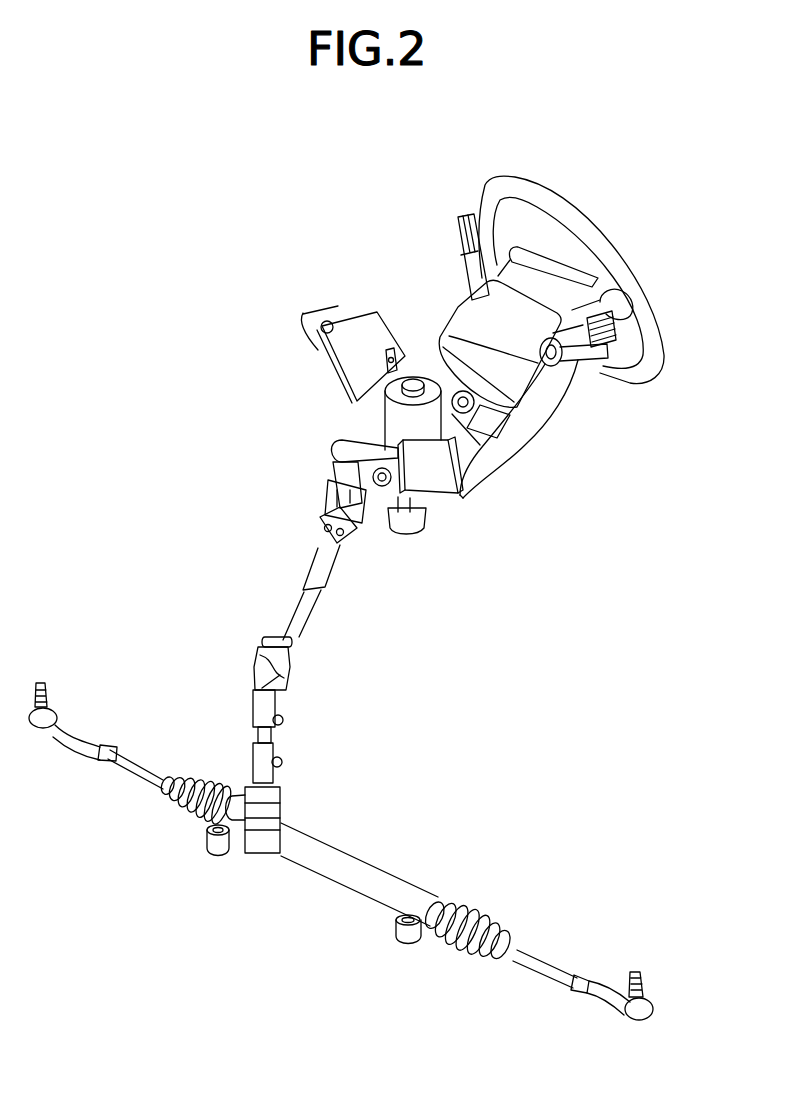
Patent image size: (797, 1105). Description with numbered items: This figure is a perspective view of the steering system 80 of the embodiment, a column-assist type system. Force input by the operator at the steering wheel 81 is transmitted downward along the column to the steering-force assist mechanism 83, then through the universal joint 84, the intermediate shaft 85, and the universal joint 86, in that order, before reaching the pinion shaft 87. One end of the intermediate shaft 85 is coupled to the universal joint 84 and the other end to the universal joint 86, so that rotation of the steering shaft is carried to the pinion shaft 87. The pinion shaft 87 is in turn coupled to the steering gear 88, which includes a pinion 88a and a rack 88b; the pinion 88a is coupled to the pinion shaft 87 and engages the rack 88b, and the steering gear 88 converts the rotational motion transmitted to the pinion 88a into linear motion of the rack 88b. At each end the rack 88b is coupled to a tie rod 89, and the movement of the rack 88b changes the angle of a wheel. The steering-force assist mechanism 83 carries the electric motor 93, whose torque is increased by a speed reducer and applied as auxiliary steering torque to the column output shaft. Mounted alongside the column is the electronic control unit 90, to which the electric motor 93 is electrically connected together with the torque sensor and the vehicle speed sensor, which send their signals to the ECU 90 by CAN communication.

The steering system 80 is at (393, 167).
The steering wheel 81 is at (570, 215).
The steering-force assist mechanism 83 is at (393, 290).
The universal joint 84 is at (328, 517).
The intermediate shaft 85 is at (312, 572).
The universal joint 86 is at (258, 664).
The pinion shaft 87 is at (268, 706).
The steering gear 88 is at (312, 794).
The pinion 88a is at (258, 840).
The rack 88b is at (292, 853).
The tie rod 89 is at (85, 742).
The electronic control unit (ECU) 90 is at (355, 358).
The electric motor 93 is at (435, 427).